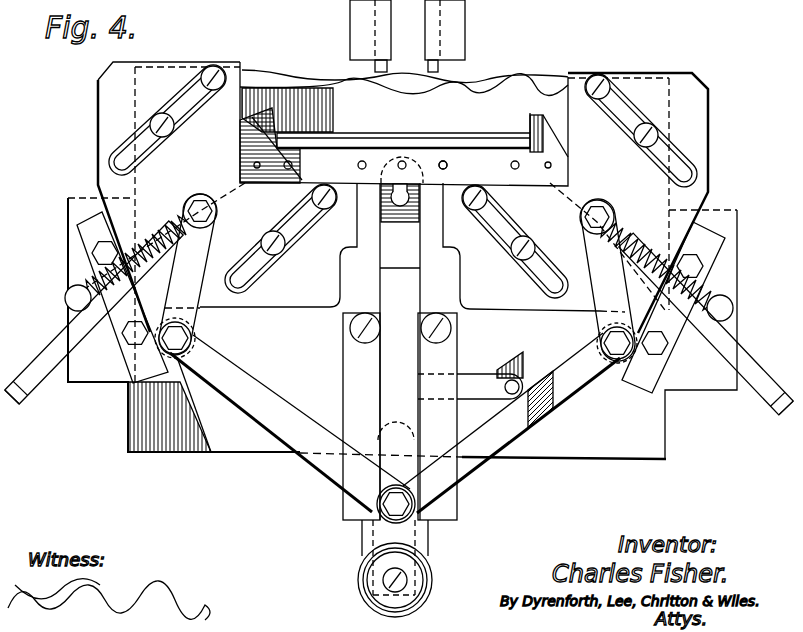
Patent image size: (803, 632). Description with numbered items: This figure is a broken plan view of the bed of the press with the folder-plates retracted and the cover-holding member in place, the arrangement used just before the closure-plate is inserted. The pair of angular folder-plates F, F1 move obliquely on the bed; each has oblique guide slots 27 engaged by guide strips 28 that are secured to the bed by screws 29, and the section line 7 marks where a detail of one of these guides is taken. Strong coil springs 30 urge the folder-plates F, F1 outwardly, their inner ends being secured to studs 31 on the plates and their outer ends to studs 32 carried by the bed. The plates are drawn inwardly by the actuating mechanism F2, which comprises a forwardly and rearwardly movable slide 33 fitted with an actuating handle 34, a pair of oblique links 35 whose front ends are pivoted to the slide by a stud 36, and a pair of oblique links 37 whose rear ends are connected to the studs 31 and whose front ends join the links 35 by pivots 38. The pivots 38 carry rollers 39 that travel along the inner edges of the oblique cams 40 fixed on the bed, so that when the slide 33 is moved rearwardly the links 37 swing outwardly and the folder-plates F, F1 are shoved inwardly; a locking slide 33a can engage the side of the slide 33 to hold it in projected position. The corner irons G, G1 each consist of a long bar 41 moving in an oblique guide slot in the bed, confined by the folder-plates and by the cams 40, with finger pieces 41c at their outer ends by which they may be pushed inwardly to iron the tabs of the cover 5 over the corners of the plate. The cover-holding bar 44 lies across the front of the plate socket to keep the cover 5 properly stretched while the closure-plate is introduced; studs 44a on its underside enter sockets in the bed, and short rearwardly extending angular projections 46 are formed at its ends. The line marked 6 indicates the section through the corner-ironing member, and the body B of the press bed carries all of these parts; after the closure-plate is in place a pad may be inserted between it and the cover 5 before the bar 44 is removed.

The cover 5 is at (298, 105).
The pad 6 is at (580, 200).
The section line 7 is at (328, 192).
The oblique guide slots 27 is at (142, 150).
The guide strips 28 is at (192, 108).
The screws 29 is at (200, 80).
The coil springs 30 is at (186, 223).
The studs 31 is at (203, 203).
The studs 32 is at (65, 298).
The slide 33 is at (397, 422).
The locking slide 33a is at (473, 372).
The actuating handle 34 is at (370, 568).
The oblique links 35 is at (268, 428).
The stud 36 is at (378, 505).
The oblique links 37 is at (205, 306).
The pivots 38 is at (191, 341).
The rollers 39 is at (170, 358).
The oblique guide members or cams 40 is at (90, 230).
The long bar 41 is at (712, 244).
The finger pieces 41c is at (20, 396).
The cover-holding bar 44 is at (432, 157).
The studs 44a is at (450, 165).
The angular projections 46 is at (280, 124).
The body B is at (402, 321).
The folder-plate F is at (106, 130).
The folder-plate F1 is at (697, 117).
The folder-plate actuating mechanism F2 is at (400, 533).
The corner iron G is at (55, 353).
The corner iron G1 is at (740, 367).